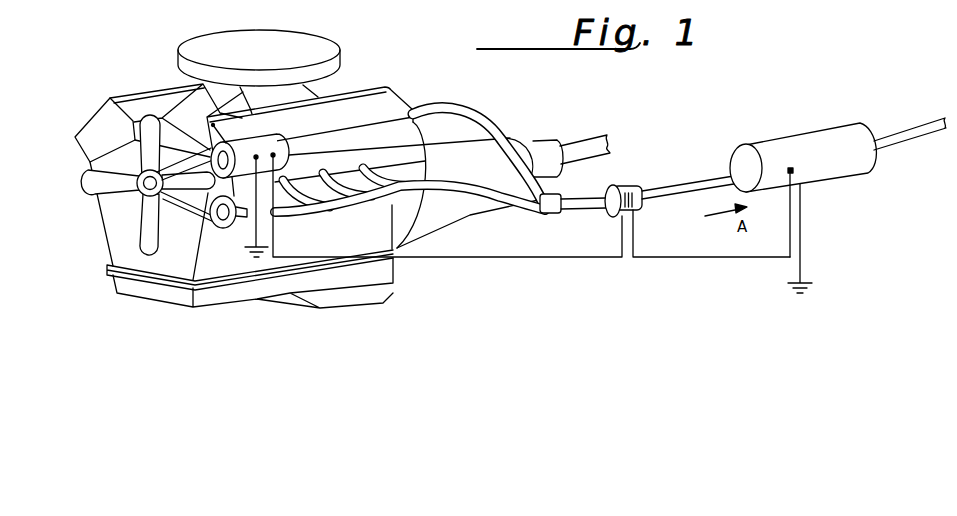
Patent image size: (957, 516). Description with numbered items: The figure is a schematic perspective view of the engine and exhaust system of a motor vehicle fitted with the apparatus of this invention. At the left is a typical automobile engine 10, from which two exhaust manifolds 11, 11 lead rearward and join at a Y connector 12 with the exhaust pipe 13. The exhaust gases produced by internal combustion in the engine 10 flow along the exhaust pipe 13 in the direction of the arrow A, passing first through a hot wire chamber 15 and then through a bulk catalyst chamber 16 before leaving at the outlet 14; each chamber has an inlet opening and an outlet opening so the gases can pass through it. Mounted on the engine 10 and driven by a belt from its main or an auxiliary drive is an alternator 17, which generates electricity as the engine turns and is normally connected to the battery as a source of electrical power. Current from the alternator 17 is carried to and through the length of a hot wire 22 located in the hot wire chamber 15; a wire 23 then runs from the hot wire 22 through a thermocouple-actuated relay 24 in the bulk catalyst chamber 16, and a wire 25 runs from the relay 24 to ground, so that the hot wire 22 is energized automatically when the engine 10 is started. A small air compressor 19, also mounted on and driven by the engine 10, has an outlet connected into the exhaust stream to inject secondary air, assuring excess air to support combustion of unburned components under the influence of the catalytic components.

The engine 10 is at (126, 236).
The exhaust manifolds 11 is at (480, 193).
The Y connector 12 is at (552, 214).
The exhaust pipe 13 is at (600, 211).
The outlet 14 is at (903, 132).
The hot wire chamber 15 is at (644, 209).
The bulk catalyst chamber 16 is at (847, 162).
The alternator 17 is at (267, 144).
The air compressor 19 is at (242, 220).
The hot wire 22 is at (630, 185).
The wire 23 is at (715, 259).
The thermocouple-actuated relay 24 is at (790, 168).
The wire 25 is at (800, 258).